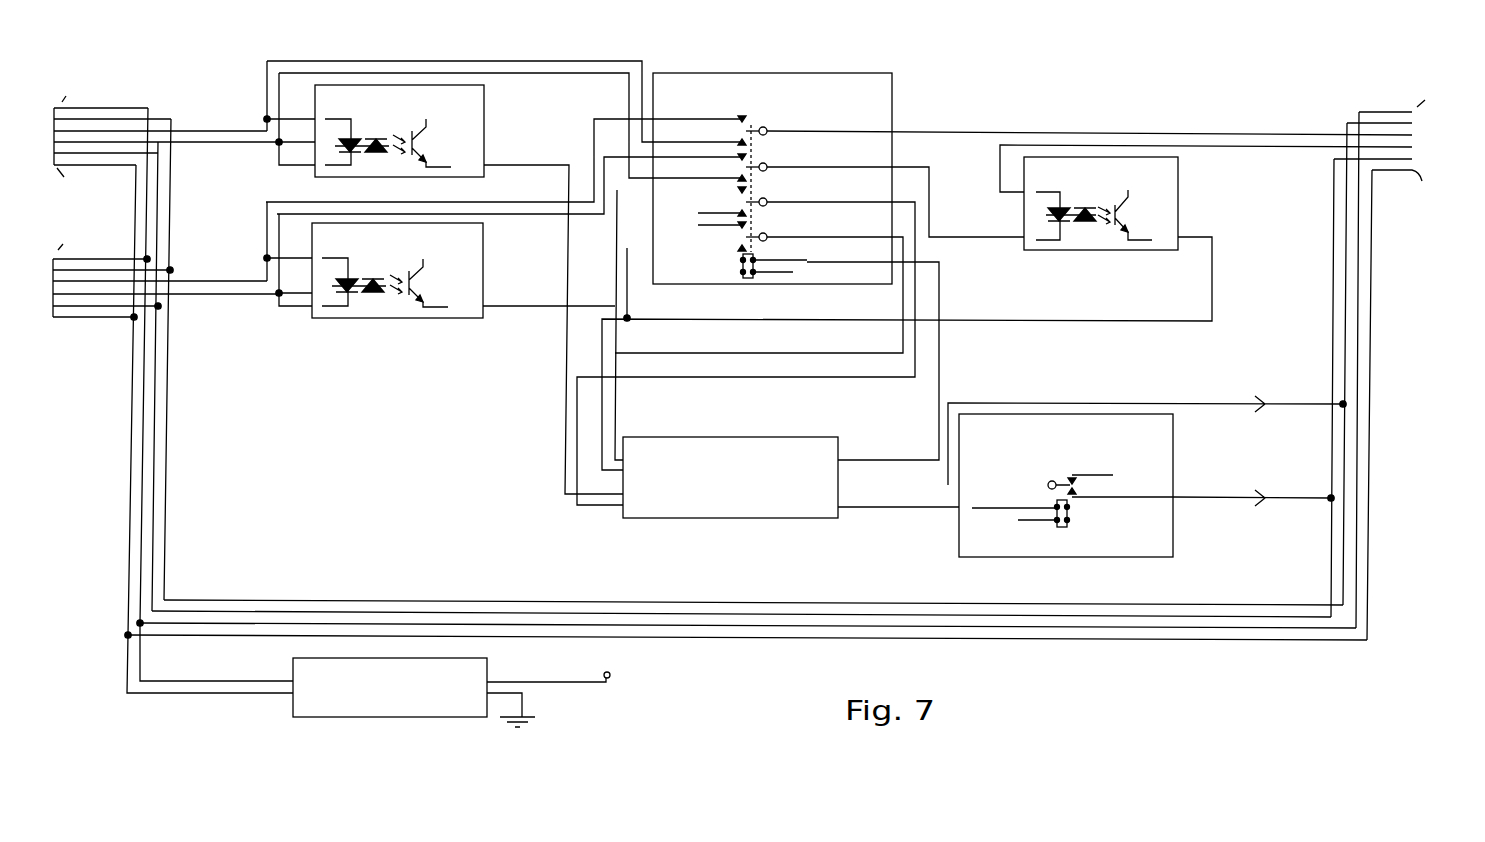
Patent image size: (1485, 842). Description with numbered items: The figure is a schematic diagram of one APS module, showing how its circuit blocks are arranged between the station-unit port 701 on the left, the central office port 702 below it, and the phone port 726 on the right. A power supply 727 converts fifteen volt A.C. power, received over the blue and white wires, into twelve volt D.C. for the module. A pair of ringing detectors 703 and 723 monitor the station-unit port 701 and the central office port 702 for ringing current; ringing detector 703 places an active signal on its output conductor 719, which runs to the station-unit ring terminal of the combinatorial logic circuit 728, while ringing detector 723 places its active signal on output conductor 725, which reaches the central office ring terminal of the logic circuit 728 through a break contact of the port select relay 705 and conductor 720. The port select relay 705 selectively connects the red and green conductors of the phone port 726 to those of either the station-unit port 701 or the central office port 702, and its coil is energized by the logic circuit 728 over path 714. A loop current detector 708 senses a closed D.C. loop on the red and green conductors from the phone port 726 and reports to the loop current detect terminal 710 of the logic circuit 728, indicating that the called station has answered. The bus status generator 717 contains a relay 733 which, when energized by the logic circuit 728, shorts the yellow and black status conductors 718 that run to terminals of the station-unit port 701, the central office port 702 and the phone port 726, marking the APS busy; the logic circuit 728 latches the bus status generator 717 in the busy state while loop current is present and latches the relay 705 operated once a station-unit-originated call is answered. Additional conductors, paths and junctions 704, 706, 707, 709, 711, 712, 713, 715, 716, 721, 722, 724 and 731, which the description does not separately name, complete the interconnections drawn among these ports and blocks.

The MSU port 701 is at (166, 343).
The C.O. port 702 is at (60, 322).
The ringing detector 703 is at (485, 143).
The MSU line to port select relay 704 is at (377, 57).
The port select relay 705 is at (712, 73).
The phone line from relay 706 is at (953, 131).
The relay output to loop current detector 707 is at (940, 240).
The loop current detector 708 is at (1070, 252).
The phone line from loop current detector 709 is at (1250, 147).
The Loop I detect terminal 710 is at (1213, 288).
The logic combiner input line 711 is at (615, 420).
The junction 712 is at (630, 300).
The relay output line to logic combiner 713 is at (742, 353).
The path 714 is at (938, 375).
The yellow bus line 715 is at (1333, 347).
The logic combiner output line 716 is at (885, 508).
The bus status generator 717 is at (1173, 520).
The yellow and black status conductors 718 is at (1185, 497).
The output conductor 719 is at (508, 165).
The conductor 720 is at (743, 377).
The MSU tip and ring wires 721 is at (183, 143).
The central office tip and ring wires 722 is at (192, 295).
The ringing detector 723 is at (362, 318).
The central office line to port select relay 724 is at (493, 213).
The output conductor 725 is at (493, 307).
The phone port 726 is at (1383, 182).
The power supply 727 is at (363, 717).
The combinatorial logic circuit 728 is at (740, 520).
The bus lines 731 is at (1215, 640).
The relay 733 is at (1065, 473).